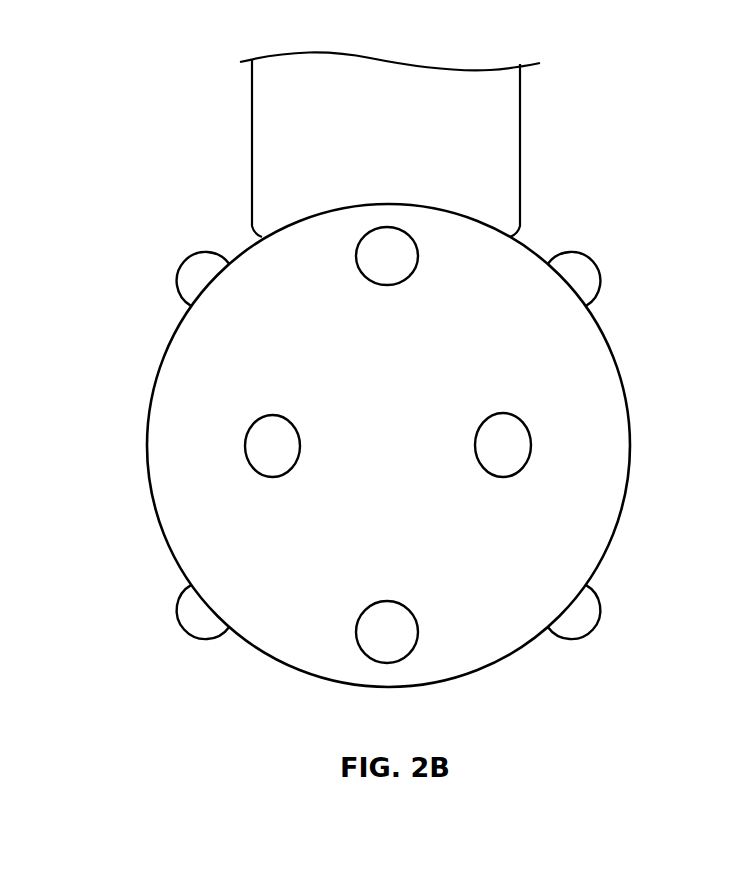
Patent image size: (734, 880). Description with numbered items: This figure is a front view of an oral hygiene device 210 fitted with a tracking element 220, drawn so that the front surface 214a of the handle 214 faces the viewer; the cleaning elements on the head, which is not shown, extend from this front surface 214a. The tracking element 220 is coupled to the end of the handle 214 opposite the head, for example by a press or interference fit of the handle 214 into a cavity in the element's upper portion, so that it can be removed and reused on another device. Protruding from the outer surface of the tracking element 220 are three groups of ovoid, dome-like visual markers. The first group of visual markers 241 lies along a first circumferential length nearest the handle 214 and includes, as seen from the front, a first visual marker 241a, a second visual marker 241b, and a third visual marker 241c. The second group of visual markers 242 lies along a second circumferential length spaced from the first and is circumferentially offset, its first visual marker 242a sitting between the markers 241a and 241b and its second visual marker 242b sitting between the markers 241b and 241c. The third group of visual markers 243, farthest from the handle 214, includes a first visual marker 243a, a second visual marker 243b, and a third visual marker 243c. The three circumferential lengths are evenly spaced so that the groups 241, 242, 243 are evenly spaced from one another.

The oral hygiene device 210 is at (599, 146).
The handle 214 is at (521, 108).
The front surface 214a is at (398, 134).
The tracking element 220 is at (186, 178).
The first group of visual markers 241 is at (616, 269).
The first visual marker 241a is at (196, 254).
The second visual marker 241b is at (365, 277).
The third visual marker 241c is at (581, 254).
The second group of visual markers 242 is at (190, 470).
The first visual marker 242a is at (250, 428).
The second visual marker 242b is at (527, 428).
The third group of visual markers 243 is at (157, 634).
The first visual marker 243a is at (196, 638).
The second visual marker 243b is at (369, 607).
The third visual marker 243c is at (581, 637).